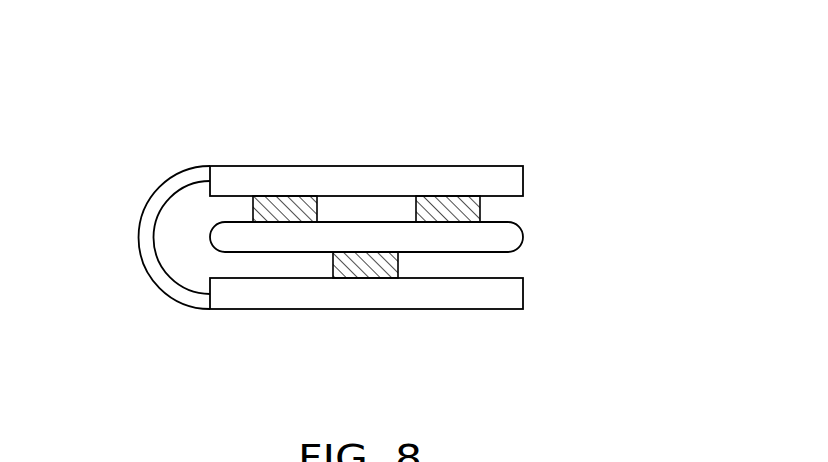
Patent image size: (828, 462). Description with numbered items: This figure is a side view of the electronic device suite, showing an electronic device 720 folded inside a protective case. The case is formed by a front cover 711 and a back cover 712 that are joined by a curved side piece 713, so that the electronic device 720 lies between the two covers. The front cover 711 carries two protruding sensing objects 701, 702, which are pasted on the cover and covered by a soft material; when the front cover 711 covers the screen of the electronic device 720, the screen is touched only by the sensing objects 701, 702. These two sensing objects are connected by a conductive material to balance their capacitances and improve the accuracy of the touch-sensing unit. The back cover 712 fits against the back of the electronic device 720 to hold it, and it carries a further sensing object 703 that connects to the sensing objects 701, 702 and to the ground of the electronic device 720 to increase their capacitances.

The sensing object 701 is at (284, 212).
The sensing object 702 is at (447, 210).
The sensing object 703 is at (372, 262).
The front cover 711 is at (503, 184).
The back cover 712 is at (503, 296).
The side piece 713 is at (147, 240).
The electronic device 720 is at (505, 239).